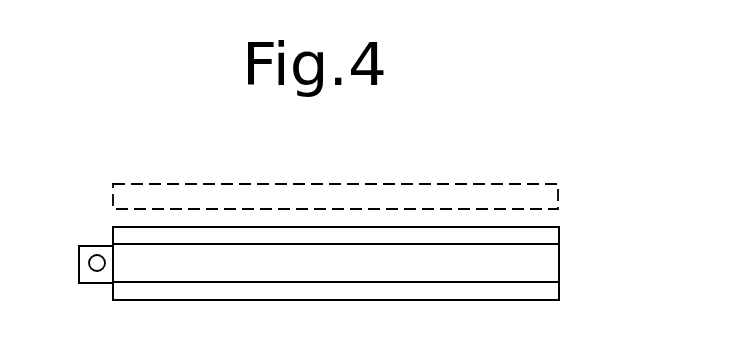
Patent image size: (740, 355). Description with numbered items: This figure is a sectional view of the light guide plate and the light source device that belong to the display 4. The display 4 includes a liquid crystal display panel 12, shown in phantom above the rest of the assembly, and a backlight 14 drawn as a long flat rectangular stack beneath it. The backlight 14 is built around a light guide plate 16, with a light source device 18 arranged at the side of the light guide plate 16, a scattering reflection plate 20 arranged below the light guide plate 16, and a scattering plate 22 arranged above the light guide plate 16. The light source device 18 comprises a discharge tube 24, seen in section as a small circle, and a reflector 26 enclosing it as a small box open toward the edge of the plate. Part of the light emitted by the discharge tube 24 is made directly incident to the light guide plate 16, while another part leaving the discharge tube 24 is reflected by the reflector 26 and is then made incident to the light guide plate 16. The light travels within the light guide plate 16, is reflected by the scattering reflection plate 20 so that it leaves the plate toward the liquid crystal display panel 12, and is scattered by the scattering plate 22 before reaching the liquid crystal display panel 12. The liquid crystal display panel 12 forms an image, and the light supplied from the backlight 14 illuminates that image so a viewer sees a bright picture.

The display 4 is at (468, 165).
The liquid crystal display panel 12 is at (516, 198).
The backlight 14 is at (568, 230).
The light guide plate 16 is at (323, 270).
The light source device 18 is at (79, 262).
The scattering reflection plate 20 is at (420, 290).
The scattering plate 22 is at (498, 235).
The discharge tube 24 is at (97, 268).
The reflector 26 is at (88, 283).